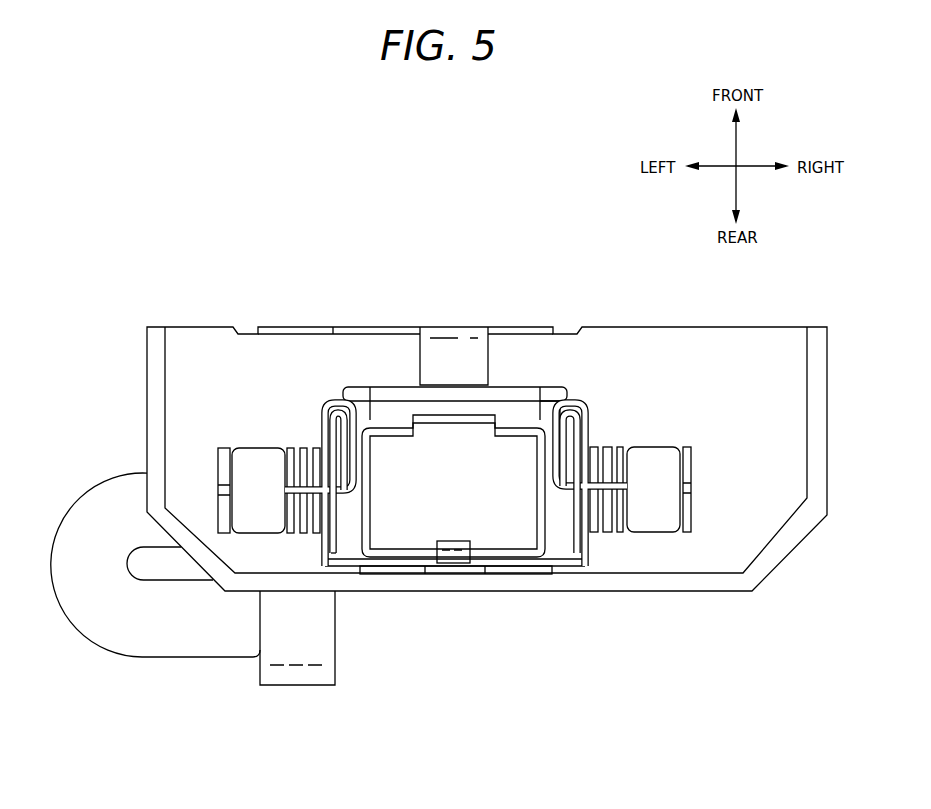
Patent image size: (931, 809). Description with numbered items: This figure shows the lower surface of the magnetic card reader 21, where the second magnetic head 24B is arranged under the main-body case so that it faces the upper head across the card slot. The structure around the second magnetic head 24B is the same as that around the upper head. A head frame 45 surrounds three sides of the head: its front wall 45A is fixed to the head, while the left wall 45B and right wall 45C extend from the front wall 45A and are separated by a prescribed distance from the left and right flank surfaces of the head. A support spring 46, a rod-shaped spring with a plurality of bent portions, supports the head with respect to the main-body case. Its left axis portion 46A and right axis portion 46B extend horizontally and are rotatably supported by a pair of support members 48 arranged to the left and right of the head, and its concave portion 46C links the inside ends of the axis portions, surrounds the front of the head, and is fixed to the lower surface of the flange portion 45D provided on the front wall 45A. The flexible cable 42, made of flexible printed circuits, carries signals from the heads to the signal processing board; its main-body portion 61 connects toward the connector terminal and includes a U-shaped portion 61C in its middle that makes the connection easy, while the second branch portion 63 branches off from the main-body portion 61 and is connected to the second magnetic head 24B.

The magnetic card reader 21 is at (504, 238).
The second magnetic head 24B is at (500, 535).
The flexible cable 42 is at (80, 638).
The head frame 45 is at (577, 402).
The front wall 45A is at (545, 417).
The left wall 45B is at (332, 438).
The right wall 45C is at (577, 557).
The flange portion 45D is at (500, 395).
The support spring 46 is at (352, 500).
The left axis portion 46A is at (315, 490).
The right axis portion 46B is at (593, 488).
The concave portion 46C is at (355, 403).
The support member 48 is at (258, 470).
The main-body portion 61 is at (282, 686).
The U-shaped portion 61C is at (93, 510).
The second branch portion 63 is at (443, 345).